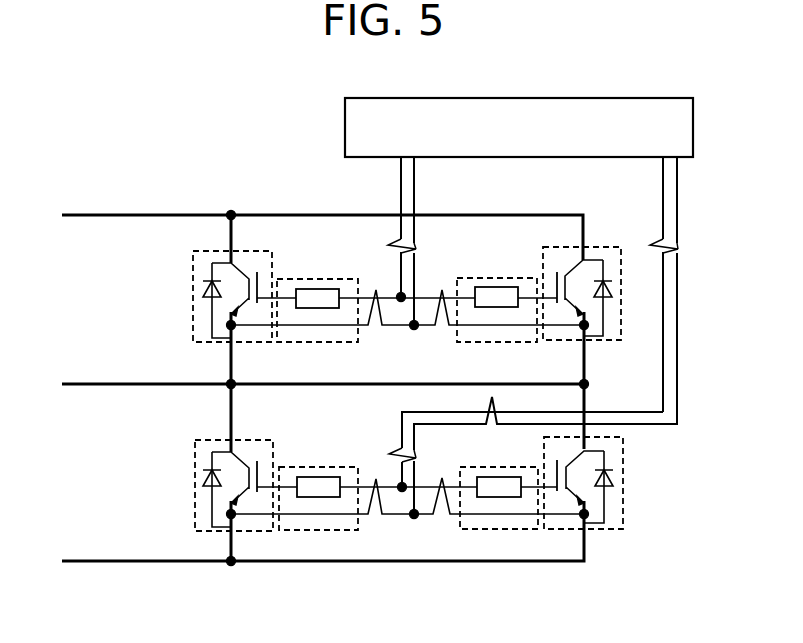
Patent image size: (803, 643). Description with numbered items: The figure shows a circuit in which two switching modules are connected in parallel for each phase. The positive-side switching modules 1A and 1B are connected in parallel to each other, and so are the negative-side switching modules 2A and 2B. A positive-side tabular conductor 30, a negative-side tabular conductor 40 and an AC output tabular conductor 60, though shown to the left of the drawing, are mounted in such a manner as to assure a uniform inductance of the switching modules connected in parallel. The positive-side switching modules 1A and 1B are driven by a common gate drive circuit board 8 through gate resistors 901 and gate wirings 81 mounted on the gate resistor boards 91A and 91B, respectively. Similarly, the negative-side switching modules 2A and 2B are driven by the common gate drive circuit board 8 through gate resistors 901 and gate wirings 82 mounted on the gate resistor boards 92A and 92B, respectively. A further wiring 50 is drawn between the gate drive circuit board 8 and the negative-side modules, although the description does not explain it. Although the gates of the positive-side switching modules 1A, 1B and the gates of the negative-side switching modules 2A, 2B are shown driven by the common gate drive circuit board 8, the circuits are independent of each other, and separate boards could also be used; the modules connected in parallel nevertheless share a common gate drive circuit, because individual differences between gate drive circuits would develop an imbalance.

The gate drive circuit board 8 is at (345, 129).
The gate wirings 81 is at (417, 185).
The gate wirings 82 is at (679, 193).
The wiring 50 is at (380, 385).
The positive-side tabular conductor 30 is at (302, 231).
The AC output tabular conductor 60 is at (305, 387).
The negative-side tabular conductor 40 is at (303, 545).
The positive-side switching module 1A is at (193, 292).
The positive-side switching module 1B is at (621, 291).
The negative-side switching module 2A is at (195, 482).
The negative-side switching module 2B is at (623, 476).
The gate resistor board 91A is at (337, 279).
The gate resistor board 91B is at (517, 278).
The gate resistor board 92A is at (303, 531).
The gate resistor board 92B is at (521, 530).
The gate resistor 901 is at (317, 308).